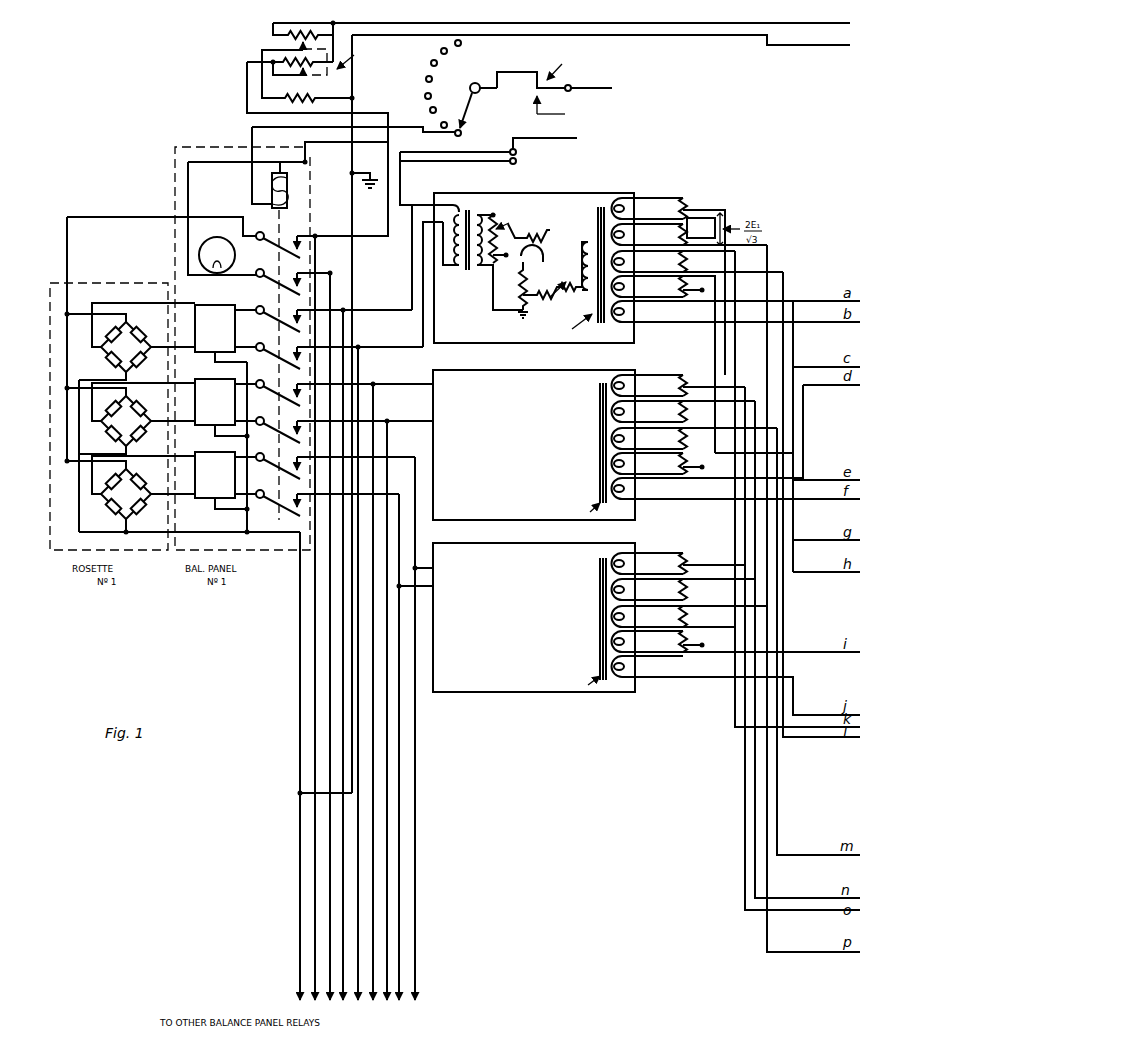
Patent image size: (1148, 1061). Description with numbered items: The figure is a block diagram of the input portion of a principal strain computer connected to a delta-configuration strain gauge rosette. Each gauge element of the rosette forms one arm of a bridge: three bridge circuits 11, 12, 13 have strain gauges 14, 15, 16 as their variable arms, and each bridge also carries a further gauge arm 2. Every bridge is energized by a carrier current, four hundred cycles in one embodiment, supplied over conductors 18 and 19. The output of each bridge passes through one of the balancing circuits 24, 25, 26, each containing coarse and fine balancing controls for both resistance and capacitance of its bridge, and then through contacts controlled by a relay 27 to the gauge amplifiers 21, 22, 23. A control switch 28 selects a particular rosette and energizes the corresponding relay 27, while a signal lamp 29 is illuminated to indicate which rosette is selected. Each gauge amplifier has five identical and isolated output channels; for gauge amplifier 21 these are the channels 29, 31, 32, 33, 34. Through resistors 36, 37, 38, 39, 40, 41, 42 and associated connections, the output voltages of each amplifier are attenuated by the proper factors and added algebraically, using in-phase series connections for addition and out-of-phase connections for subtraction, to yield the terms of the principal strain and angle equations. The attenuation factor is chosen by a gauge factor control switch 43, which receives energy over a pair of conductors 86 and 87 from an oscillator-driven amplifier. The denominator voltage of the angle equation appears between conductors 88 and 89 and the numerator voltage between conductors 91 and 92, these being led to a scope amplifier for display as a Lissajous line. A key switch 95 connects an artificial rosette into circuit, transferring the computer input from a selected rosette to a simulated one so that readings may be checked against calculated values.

The strain gage 2 is at (102, 429).
The bridge circuit 11 is at (130, 341).
The bridge circuit 12 is at (130, 418).
The bridge circuit 13 is at (130, 495).
The strain gauge 14 is at (107, 329).
The strain gauge 15 is at (107, 403).
The strain gauge 16 is at (107, 476).
The conductor 18 is at (68, 226).
The conductor 19 is at (353, 152).
The gauge amplifier 21 is at (466, 333).
The gauge amplifier 22 is at (473, 509).
The gauge amplifier 23 is at (473, 691).
The balancing circuit 24 is at (226, 306).
The balancing circuit 25 is at (212, 380).
The balancing circuit 26 is at (212, 452).
The relay 27 is at (290, 181).
The switch 28 is at (473, 104).
The signal lamp 29 is at (213, 273).
The output channel 31 is at (631, 246).
The output channel 32 is at (631, 276).
The output channel 33 is at (627, 305).
The output channel 34 is at (633, 327).
The resistor 36 is at (688, 210).
The resistor 37 is at (712, 283).
The resistor 38 is at (701, 228).
The resistor 39 is at (680, 242).
The resistor 40 is at (688, 267).
The resistor 41 is at (679, 286).
The resistor 42 is at (695, 303).
The gauge factor control switch 43 is at (262, 64).
The conductor 86 is at (800, 25).
The conductor 87 is at (740, 45).
The conductor 88 is at (745, 792).
The conductor 89 is at (767, 759).
The conductor 91 is at (755, 758).
The conductor 92 is at (777, 787).
The key switch 95 is at (550, 93).